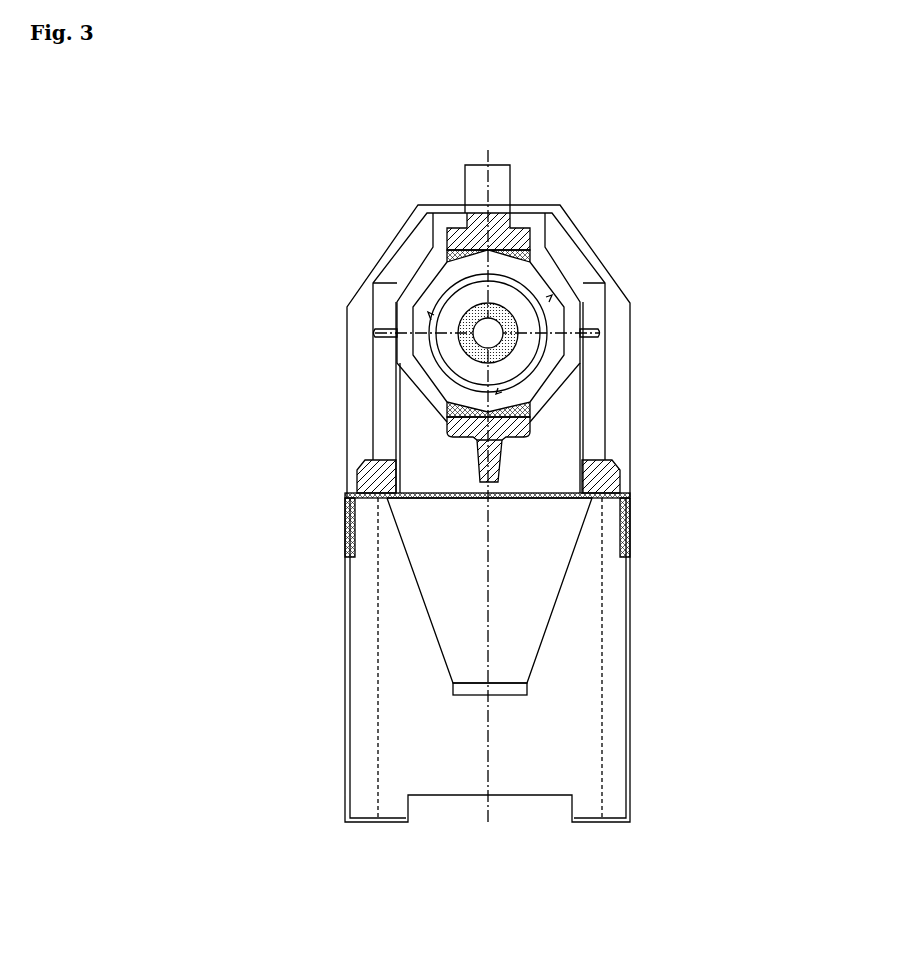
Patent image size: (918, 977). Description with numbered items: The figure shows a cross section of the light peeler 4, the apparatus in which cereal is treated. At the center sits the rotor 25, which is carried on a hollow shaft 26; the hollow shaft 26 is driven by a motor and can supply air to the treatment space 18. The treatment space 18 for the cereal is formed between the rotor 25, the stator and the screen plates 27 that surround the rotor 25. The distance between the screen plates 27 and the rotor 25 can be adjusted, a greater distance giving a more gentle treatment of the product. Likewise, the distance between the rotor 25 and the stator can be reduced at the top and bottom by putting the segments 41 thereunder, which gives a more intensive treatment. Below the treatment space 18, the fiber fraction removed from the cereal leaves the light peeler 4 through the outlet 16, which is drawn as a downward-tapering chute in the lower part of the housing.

The light peeler 4 is at (282, 236).
The outlet 16 is at (540, 656).
The treatment space 18 is at (545, 370).
The rotor 25 is at (520, 292).
The hollow shaft 26 is at (520, 332).
The screen plates 27 is at (417, 333).
The segments 41 is at (524, 248).